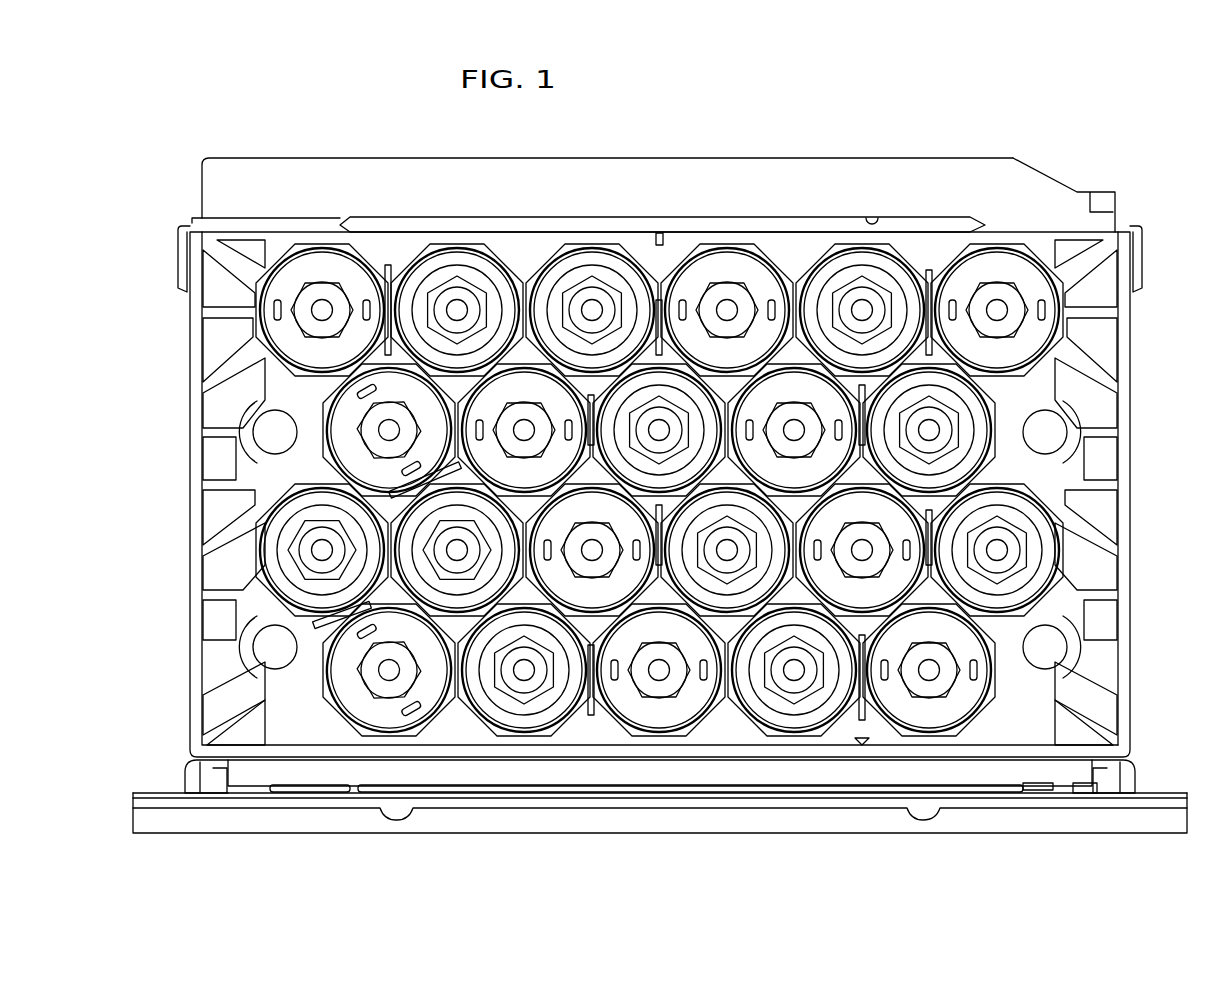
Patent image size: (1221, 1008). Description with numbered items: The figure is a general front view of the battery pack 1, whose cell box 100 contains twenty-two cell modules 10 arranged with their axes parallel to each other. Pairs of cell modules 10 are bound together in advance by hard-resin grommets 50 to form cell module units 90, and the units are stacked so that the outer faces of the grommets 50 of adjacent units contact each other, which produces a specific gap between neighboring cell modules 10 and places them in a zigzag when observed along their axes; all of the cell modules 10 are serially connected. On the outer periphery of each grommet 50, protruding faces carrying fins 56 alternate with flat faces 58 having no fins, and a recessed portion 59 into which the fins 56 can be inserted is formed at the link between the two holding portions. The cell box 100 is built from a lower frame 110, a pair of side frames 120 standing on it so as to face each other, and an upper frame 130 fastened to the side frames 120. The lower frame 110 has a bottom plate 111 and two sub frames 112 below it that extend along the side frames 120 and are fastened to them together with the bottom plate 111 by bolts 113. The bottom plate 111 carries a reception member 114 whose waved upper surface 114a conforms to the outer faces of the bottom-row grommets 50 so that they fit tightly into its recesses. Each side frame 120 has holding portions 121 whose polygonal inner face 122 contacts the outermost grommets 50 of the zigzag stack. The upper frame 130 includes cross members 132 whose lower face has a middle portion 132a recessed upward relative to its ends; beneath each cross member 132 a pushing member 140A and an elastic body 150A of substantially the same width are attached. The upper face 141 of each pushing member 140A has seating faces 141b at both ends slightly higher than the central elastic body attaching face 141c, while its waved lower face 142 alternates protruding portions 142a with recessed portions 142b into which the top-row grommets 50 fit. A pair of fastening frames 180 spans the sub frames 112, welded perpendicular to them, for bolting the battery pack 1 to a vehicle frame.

The battery pack 1 is at (725, 125).
The cell module 10 is at (275, 535).
The grommet 50 is at (593, 243).
The fin 56 is at (870, 718).
The flat face 58 is at (977, 590).
The recessed portion 59 is at (845, 705).
The cell module unit 90 is at (255, 433).
The cell box 100 is at (1133, 352).
The lower frame 110 is at (530, 772).
The bottom plate 111 is at (437, 770).
The sub frame 112 is at (185, 773).
The bolt 113 is at (1108, 790).
The reception member 114 is at (593, 745).
The upper surface 114a is at (467, 735).
The side frame 120 is at (185, 352).
The holding portion 121 is at (1133, 404).
The inner face 122 is at (1118, 462).
The upper frame 130 is at (930, 158).
The cross member 132 is at (977, 158).
The middle portion 132a is at (872, 218).
The pushing member 140A is at (659, 417).
The upper face 141 is at (462, 245).
The seating face 141b is at (340, 226).
The elastic body attaching face 141c is at (653, 233).
The lower face 142 is at (515, 257).
The protruding portion 142a is at (790, 257).
The recessed portion 142b is at (757, 260).
The elastic body 150A is at (548, 223).
The fastening frame 180 is at (1012, 835).